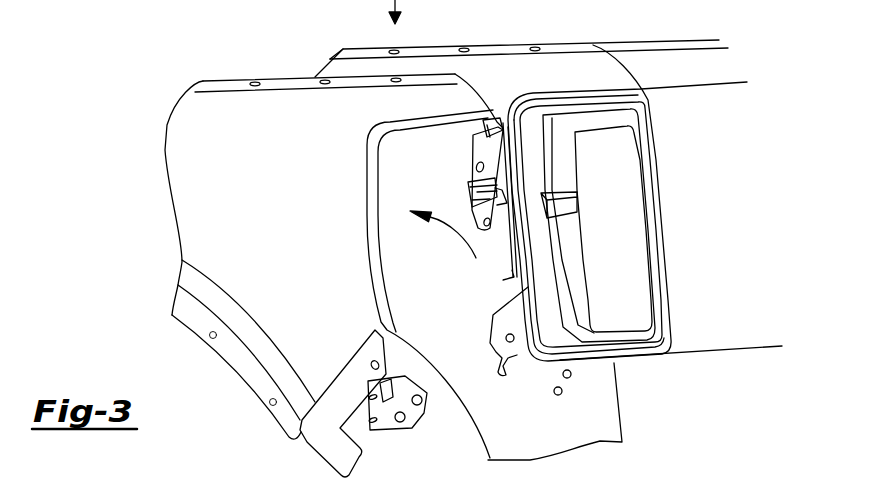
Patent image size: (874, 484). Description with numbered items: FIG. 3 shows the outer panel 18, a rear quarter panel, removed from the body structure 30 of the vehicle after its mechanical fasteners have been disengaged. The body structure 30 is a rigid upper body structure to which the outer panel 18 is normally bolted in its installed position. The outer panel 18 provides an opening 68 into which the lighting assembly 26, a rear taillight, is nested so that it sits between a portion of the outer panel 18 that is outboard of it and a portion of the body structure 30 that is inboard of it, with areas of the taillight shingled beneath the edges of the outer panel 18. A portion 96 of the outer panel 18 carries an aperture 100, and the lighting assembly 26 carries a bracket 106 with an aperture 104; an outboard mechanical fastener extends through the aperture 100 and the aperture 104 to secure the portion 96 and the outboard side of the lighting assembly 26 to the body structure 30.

The outer panel 18 is at (203, 178).
The body structure 30 is at (329, 0).
The lighting assembly 26 is at (614, 172).
The opening 68 is at (442, 266).
The aperture 100 is at (371, 362).
The portion of the outer panel 96 is at (350, 397).
The aperture 104 is at (506, 336).
The bracket 106 is at (505, 374).